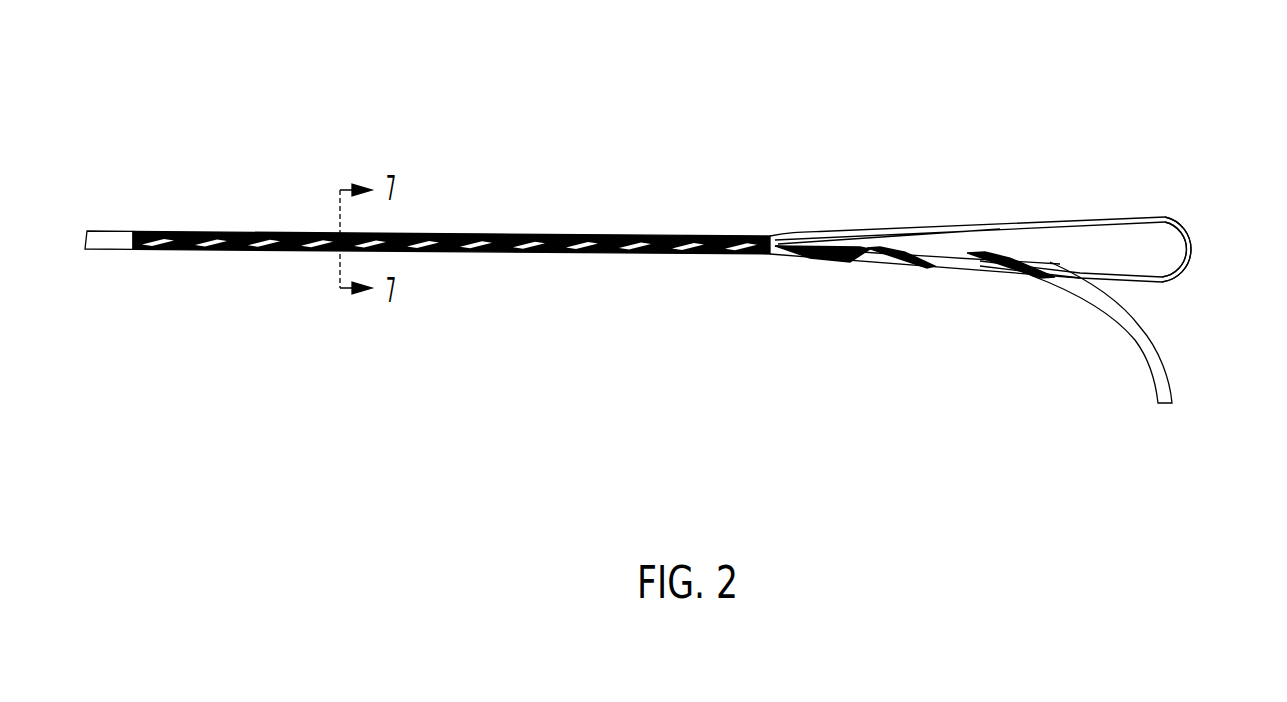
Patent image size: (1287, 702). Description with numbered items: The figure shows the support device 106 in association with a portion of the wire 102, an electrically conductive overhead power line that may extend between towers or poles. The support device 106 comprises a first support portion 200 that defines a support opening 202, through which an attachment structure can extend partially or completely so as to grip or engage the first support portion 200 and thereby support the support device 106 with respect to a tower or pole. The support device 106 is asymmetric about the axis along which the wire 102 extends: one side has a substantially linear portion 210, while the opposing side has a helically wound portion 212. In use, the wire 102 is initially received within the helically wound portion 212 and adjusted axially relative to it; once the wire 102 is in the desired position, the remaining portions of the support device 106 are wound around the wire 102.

The wire 102 is at (1157, 376).
The support device 106 is at (1068, 91).
The first support portion 200 is at (1188, 233).
The support opening 202 is at (1090, 240).
The substantially linear portion 210 is at (948, 225).
The helically wound portion 212 is at (905, 268).